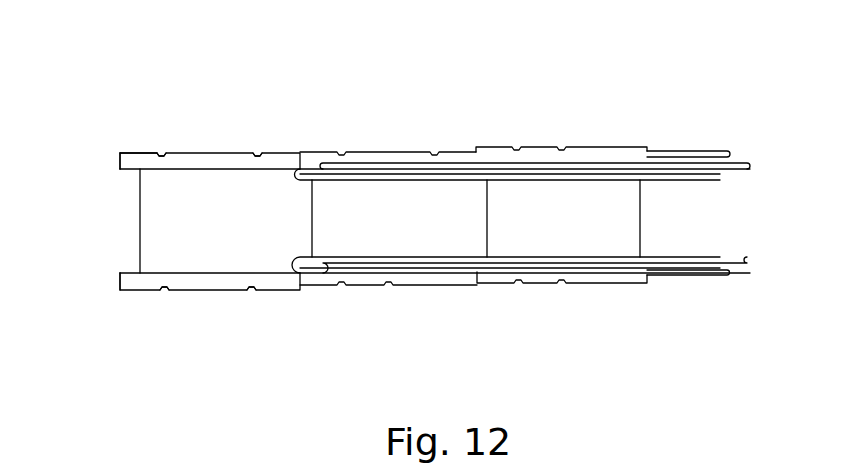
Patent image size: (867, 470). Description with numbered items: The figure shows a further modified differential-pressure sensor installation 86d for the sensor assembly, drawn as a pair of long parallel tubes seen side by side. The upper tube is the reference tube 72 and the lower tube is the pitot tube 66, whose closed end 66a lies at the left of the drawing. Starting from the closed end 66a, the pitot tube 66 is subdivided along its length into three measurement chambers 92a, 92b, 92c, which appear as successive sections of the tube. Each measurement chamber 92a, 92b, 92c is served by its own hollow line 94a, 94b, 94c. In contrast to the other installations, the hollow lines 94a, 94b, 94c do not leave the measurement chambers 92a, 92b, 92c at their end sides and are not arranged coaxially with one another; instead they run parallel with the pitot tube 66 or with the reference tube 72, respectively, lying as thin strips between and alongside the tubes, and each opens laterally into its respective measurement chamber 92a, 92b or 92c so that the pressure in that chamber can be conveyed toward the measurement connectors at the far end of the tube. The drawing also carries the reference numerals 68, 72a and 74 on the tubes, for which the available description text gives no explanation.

The pitot tube 66 is at (142, 300).
The closed end 66a is at (120, 277).
The second contact elements 68 is at (212, 285).
The reference tube 72 is at (134, 147).
The end face of first housing part 72a is at (118, 165).
The first contact elements 74 is at (210, 153).
The differential-pressure sensor installation 86d is at (212, 88).
The measurement chamber 92a is at (187, 152).
The measurement chamber 92b is at (370, 152).
The measurement chamber 92c is at (545, 148).
The hollow line 94a is at (347, 257).
The hollow line 94b is at (525, 257).
The hollow line 94c is at (683, 148).